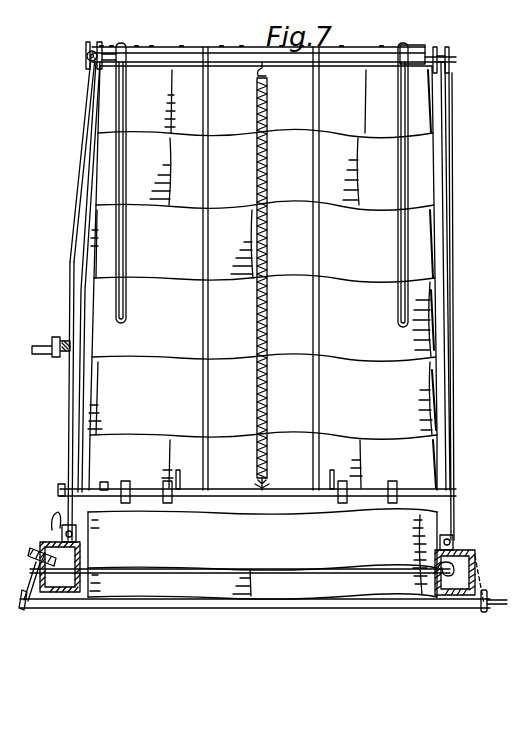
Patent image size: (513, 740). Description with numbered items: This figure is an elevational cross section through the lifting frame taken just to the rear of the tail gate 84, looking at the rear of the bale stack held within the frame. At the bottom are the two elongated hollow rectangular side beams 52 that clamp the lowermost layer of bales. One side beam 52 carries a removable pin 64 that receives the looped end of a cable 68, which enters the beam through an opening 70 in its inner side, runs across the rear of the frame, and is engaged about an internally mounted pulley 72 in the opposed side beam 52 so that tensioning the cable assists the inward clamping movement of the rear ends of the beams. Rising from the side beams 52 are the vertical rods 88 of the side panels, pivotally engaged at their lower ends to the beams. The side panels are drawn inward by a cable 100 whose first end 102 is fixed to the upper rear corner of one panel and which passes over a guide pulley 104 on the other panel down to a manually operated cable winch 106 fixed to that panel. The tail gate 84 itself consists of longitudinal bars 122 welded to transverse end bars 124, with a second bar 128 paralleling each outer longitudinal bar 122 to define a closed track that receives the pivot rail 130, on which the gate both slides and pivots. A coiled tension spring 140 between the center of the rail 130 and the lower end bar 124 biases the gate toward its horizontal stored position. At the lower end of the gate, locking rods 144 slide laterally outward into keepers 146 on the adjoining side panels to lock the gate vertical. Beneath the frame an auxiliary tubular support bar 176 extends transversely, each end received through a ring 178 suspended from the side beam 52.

The side beam 52 is at (458, 552).
The removable pin 64 is at (441, 592).
The cable 68 is at (290, 568).
The opening 70 is at (430, 572).
The pulley 72 is at (42, 568).
The tail gate 84 is at (432, 390).
The vertical rod 88 is at (70, 422).
The cable 100 is at (67, 262).
The first end of cable 102 is at (448, 48).
The guide pulley 104 is at (86, 56).
The cable winch 106 is at (66, 334).
The longitudinal bar 122 is at (418, 362).
The transverse end bar 124 is at (161, 52).
The second bar 128 is at (397, 240).
The pivot rail 130 is at (352, 60).
The coiled tension spring 140 is at (266, 85).
The locking rod 144 is at (107, 498).
The keeper 146 is at (452, 486).
The tubular support bar 176 is at (165, 602).
The ring 178 is at (480, 603).